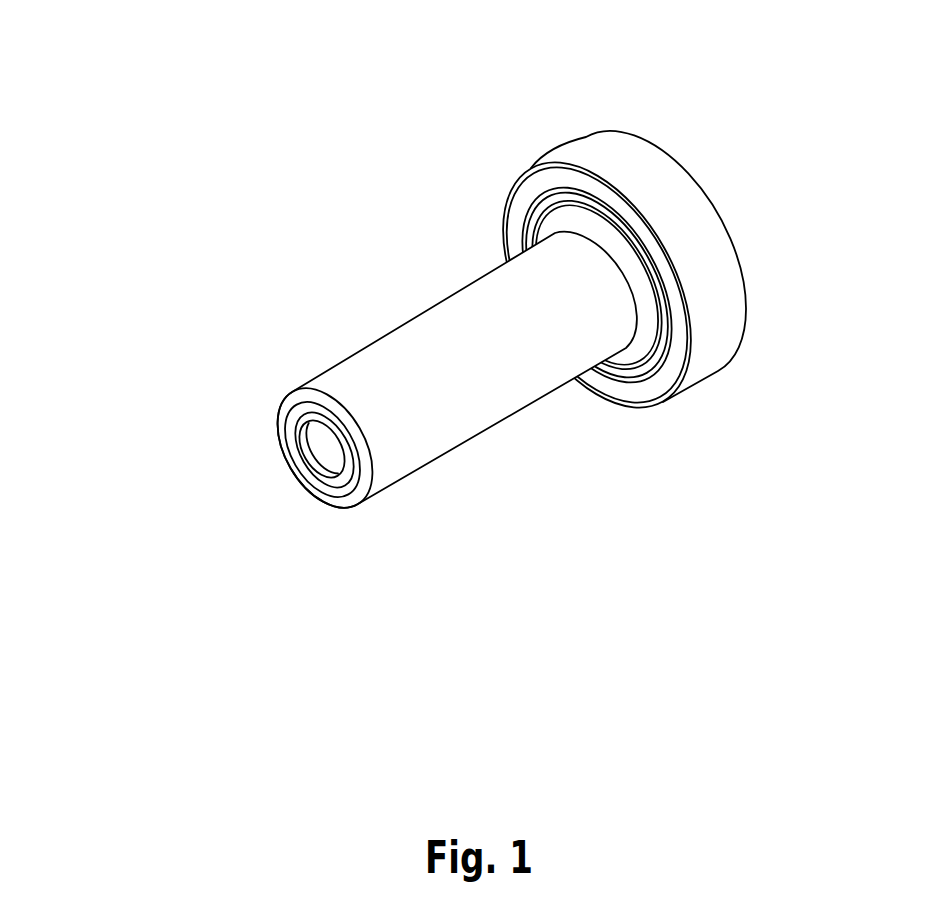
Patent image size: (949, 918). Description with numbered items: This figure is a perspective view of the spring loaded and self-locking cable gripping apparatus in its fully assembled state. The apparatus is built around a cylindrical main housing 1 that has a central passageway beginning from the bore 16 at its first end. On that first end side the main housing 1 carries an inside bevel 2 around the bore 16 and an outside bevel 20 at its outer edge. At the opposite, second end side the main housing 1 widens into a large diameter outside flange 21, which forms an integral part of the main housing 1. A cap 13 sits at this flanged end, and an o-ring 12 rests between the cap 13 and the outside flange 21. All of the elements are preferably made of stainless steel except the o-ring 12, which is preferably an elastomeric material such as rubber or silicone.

The cylindrical main housing 1 is at (403, 422).
The inside bevel 2 is at (320, 480).
The o-ring 12 is at (527, 210).
The cap 13 is at (620, 162).
The bore 16 is at (313, 460).
The outside bevel 20 is at (313, 397).
The large diameter outside flange 21 is at (670, 347).